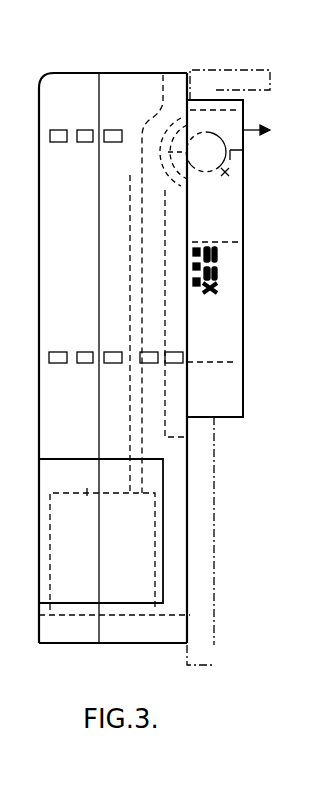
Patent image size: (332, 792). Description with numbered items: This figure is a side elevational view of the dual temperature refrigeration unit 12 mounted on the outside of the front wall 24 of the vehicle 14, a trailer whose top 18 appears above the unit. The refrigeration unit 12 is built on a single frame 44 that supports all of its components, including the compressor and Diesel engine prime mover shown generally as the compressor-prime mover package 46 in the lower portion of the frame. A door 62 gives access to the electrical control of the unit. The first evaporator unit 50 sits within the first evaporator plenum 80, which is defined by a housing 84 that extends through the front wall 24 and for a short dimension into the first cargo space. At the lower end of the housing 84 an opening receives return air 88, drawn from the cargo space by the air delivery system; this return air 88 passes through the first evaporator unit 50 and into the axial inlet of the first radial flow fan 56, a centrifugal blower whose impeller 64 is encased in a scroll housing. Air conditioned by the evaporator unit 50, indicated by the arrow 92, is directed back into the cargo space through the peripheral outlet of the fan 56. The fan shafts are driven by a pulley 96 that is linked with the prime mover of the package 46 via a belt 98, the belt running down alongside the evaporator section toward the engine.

The dual temperature refrigeration unit 12 is at (107, 73).
The vehicle 14 is at (232, 70).
The top 18 is at (252, 78).
The front wall 24 is at (214, 665).
The frame 44 is at (67, 610).
The compressor-prime mover package 46 is at (86, 491).
The first evaporator unit 50 is at (223, 358).
The first radial flow fan 56 is at (227, 214).
The door 62 is at (88, 459).
The impeller 64 is at (243, 183).
The first evaporator plenum 80 is at (225, 397).
The housing 84 is at (243, 325).
The return air 88 is at (228, 422).
The conditioned air 92 is at (253, 133).
The pulley 96 is at (136, 118).
The belt 98 is at (128, 235).